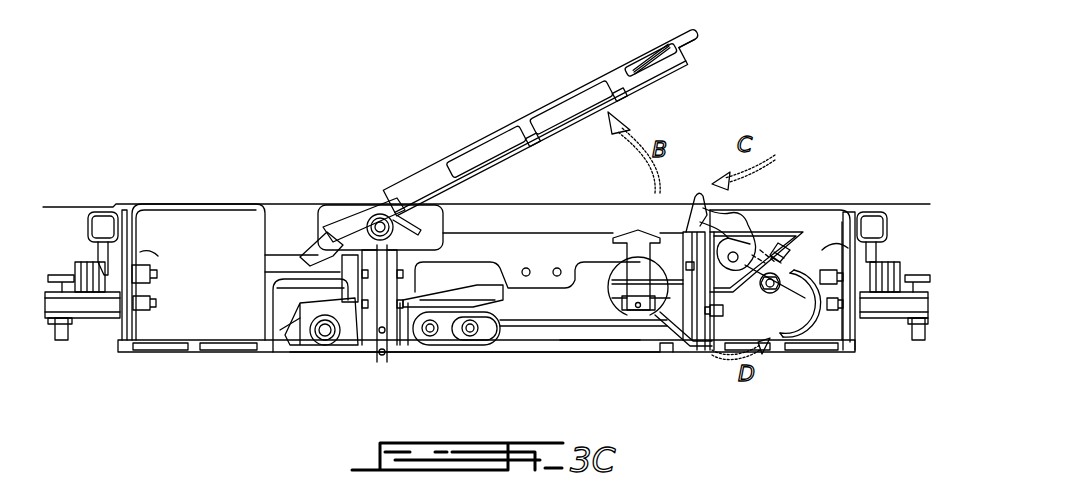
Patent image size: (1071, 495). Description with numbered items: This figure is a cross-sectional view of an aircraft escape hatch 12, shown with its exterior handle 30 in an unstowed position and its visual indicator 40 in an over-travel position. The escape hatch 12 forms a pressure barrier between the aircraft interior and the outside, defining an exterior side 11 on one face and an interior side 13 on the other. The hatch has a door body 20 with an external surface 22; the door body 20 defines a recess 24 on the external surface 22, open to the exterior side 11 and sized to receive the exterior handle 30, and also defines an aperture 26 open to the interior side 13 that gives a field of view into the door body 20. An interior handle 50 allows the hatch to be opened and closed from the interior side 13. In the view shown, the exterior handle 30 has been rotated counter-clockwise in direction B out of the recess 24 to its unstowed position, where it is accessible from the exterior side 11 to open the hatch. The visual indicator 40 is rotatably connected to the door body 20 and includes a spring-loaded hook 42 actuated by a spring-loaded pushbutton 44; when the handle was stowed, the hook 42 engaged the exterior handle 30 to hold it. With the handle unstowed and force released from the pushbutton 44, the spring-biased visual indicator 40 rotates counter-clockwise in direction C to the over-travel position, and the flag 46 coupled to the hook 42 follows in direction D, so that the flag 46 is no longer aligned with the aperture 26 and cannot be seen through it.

The exterior side 11 is at (252, 183).
The escape hatch 12 is at (869, 158).
The interior side 13 is at (250, 410).
The door body 20 is at (158, 222).
The external surface 22 is at (192, 206).
The recess 24 is at (585, 237).
The aperture 26 is at (725, 357).
The exterior handle 30 is at (513, 125).
The visual indicator 40 is at (750, 205).
The hook 42 is at (693, 267).
The pushbutton 44 is at (686, 212).
The flag 46 is at (800, 312).
The interior handle 50 is at (558, 352).